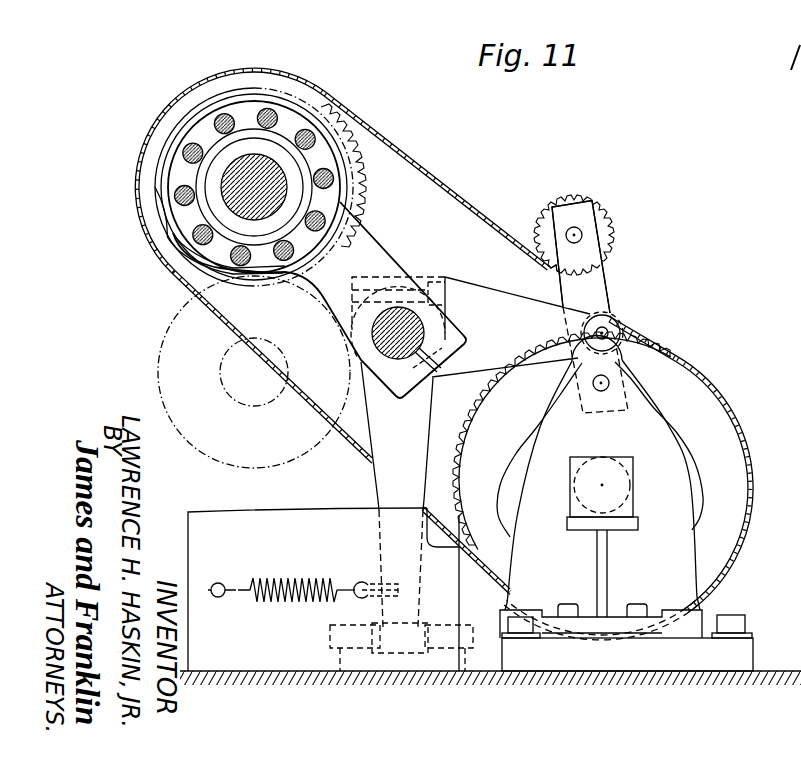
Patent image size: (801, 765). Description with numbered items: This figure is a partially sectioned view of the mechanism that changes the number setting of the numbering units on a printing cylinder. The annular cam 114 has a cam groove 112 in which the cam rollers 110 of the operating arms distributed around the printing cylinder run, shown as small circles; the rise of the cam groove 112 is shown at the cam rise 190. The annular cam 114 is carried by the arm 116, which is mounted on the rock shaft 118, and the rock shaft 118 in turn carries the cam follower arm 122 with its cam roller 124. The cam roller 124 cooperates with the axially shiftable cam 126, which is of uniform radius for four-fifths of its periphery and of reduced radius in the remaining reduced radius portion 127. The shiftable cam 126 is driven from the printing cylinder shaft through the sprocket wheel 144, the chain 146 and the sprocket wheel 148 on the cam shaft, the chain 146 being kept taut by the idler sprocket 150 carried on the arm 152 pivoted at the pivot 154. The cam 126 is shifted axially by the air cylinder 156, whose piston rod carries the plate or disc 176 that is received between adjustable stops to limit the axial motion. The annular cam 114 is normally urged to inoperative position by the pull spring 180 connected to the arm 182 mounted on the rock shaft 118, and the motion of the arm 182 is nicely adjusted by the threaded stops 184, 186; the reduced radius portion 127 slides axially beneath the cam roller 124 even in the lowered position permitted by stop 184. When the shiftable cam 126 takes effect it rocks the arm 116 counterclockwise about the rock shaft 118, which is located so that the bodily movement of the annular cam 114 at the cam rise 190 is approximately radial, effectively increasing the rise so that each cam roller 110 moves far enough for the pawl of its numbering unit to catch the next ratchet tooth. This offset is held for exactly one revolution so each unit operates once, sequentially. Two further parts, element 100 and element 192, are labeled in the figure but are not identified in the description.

The drive unit housing 100 is at (302, 263).
The cam rollers 110 is at (175, 198).
The cam groove 112 is at (243, 112).
The annular cam 114 is at (292, 107).
The arm 116 is at (373, 247).
The rock shaft 118 is at (412, 311).
The cam follower arm 122 is at (482, 287).
The cam roller 124 is at (619, 323).
The axially shiftable cam 126 is at (705, 407).
The reduced radius portion 127 is at (668, 360).
The sprocket wheel 144 is at (277, 78).
The chain 146 is at (427, 168).
The sprocket wheel 148 is at (482, 407).
The idler sprocket 150 is at (611, 215).
The arm 152 is at (604, 280).
The pivot 154 is at (610, 382).
The air cylinder 156 is at (620, 457).
The plate or disc 176 is at (703, 463).
The pull spring 180 is at (279, 602).
The arm 182 is at (380, 488).
The threaded stop 184 is at (328, 640).
The threaded stop 186 is at (473, 643).
The cam rise 190 is at (177, 243).
The phantom wheel 192 is at (180, 337).